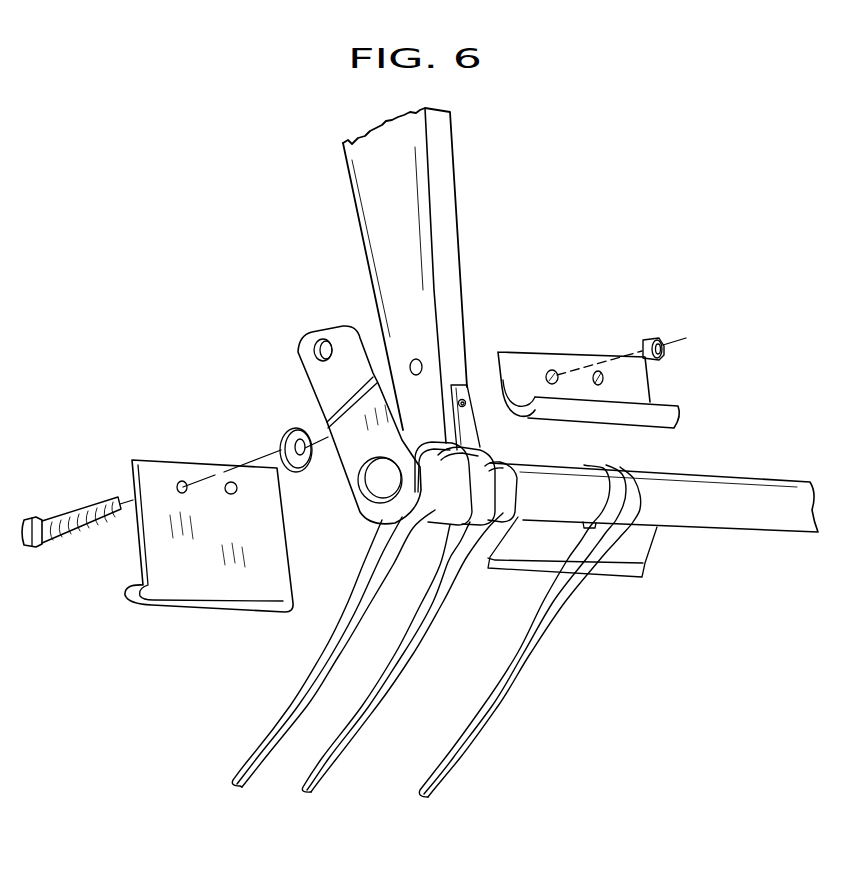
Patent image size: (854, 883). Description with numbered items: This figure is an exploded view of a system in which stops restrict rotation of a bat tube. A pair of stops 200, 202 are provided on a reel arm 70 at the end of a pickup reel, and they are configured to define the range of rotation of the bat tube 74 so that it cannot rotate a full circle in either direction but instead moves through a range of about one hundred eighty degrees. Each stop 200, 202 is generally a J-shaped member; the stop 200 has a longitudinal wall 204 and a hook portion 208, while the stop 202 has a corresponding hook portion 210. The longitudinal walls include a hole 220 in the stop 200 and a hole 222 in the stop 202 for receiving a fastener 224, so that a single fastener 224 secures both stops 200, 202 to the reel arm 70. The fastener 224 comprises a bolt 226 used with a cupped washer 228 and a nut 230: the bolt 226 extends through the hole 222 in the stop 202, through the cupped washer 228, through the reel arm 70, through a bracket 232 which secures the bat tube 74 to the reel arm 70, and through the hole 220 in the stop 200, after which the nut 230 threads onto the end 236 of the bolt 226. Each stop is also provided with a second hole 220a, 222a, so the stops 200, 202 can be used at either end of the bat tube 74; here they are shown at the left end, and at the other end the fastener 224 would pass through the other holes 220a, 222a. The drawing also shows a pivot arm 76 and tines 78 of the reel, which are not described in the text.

The reel arm 70 is at (428, 236).
The bat tube 74 is at (734, 516).
The pivot arm 76 is at (300, 384).
The tines 78 is at (290, 693).
The stop 200 is at (626, 379).
The stop 202 is at (173, 545).
The longitudinal wall 204 is at (602, 365).
The hook portion 208 is at (678, 422).
The hook portion 210 is at (126, 596).
The hole 220 is at (551, 369).
The hole 220a is at (598, 370).
The hole 222 is at (184, 480).
The hole 222a is at (231, 481).
The fastener 224 is at (81, 496).
The bolt 226 is at (50, 542).
The cupped washer 228 is at (282, 430).
The nut 230 is at (652, 338).
The bracket 232 is at (474, 430).
The end of the bolt 236 is at (108, 497).